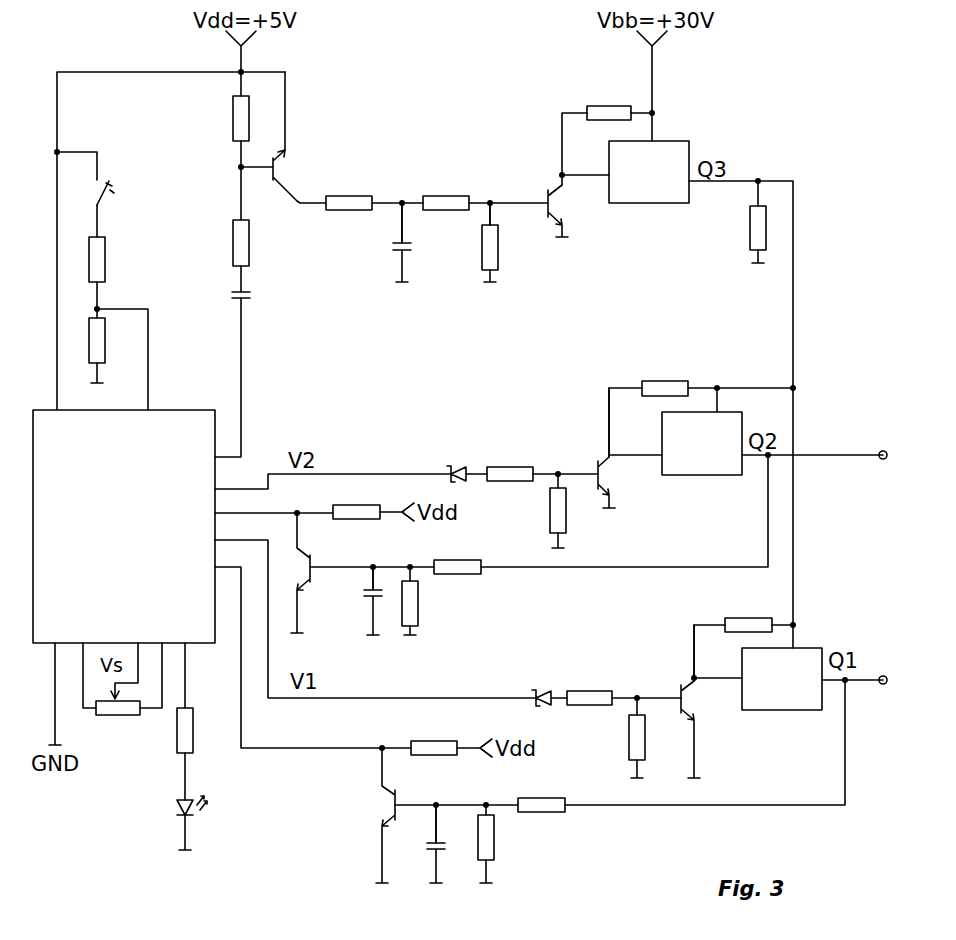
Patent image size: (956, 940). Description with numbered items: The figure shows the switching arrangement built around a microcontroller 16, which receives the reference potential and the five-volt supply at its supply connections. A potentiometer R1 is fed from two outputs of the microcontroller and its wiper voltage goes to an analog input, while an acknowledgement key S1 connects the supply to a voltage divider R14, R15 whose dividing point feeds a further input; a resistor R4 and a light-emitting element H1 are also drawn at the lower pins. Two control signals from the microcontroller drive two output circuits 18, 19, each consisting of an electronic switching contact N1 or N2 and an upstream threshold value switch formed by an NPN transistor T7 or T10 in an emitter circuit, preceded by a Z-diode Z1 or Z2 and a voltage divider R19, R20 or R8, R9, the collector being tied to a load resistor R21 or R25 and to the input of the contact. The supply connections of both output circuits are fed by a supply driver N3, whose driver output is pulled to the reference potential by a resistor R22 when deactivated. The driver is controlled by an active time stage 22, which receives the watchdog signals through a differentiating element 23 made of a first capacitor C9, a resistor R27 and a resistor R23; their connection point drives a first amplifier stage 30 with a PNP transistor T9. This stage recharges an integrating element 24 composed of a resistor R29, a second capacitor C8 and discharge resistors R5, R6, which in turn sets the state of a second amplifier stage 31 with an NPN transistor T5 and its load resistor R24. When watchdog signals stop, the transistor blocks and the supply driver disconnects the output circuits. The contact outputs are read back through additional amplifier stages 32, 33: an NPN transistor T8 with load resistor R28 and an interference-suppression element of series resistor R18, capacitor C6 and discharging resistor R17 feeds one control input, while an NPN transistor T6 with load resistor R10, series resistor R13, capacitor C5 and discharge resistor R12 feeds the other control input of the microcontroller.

The microcontroller 16 is at (190, 426).
The output circuit 18 is at (672, 653).
The output circuit 19 is at (587, 422).
The time stage 22 is at (337, 140).
The differentiating element 23 is at (265, 278).
The integrating element 24 is at (423, 232).
The first amplifier stage 30 is at (372, 192).
The second amplifier stage 31 is at (483, 183).
The additional amplifier stage 32 is at (456, 806).
The additional amplifier stage 33 is at (375, 562).
The acknowledgement key S1 is at (121, 191).
The potentiometer R1 is at (118, 724).
The resistor R4 is at (200, 730).
The discharge resistor R5 is at (446, 190).
The discharge resistor R6 is at (474, 242).
The voltage divider resistor R8 is at (510, 461).
The voltage divider resistor R9 is at (572, 511).
The load resistor R10 is at (356, 499).
The discharge resistor R12 is at (432, 601).
The series resistor R13 is at (457, 554).
The voltage divider resistor R14 is at (119, 259).
The voltage divider resistor R15 is at (119, 350).
The discharging resistor R17 is at (509, 844).
The series resistor R18 is at (541, 792).
The voltage divider resistor R19 is at (588, 681).
The voltage divider resistor R20 is at (613, 738).
The load resistor R21 is at (748, 610).
The resistor R22 is at (736, 222).
The resistor R23 is at (218, 118).
The load resistor R24 is at (607, 100).
The load resistor R25 is at (665, 376).
The resistor R27 is at (218, 243).
The load resistor R28 is at (433, 736).
The resistor R29 is at (348, 190).
The capacitor C5 is at (357, 601).
The capacitor C6 is at (422, 844).
The second capacitor C8 is at (385, 242).
The first capacitor C9 is at (224, 296).
The NPN transistor T5 is at (563, 211).
The NPN transistor T6 is at (291, 573).
The NPN transistor T7 is at (698, 729).
The NPN transistor T8 is at (374, 815).
The PNP transistor T9 is at (273, 175).
The NPN transistor T10 is at (625, 482).
The Z-diode Z1 is at (546, 682).
The Z-diode Z2 is at (457, 461).
The electronic switching contact N1 is at (782, 693).
The electronic switching contact N2 is at (702, 458).
The supply driver N3 is at (649, 185).
The light emitting diode H1 is at (176, 806).